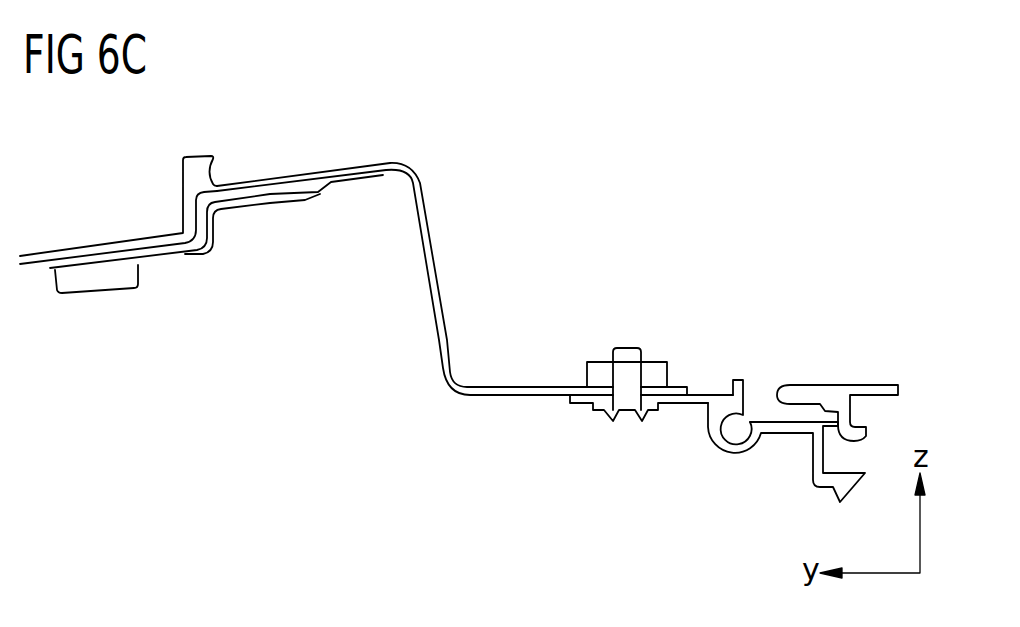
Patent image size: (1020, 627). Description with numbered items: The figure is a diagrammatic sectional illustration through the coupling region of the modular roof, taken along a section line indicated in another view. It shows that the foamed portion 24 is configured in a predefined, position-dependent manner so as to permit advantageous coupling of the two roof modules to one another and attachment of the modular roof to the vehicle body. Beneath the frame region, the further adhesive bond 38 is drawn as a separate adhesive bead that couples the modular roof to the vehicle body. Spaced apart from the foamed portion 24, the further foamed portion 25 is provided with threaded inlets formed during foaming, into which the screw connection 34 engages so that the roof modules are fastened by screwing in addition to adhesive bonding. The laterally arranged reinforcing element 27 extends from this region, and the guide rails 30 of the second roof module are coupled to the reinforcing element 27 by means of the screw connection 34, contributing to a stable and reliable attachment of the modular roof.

The foamed portion 24 is at (192, 182).
The reinforcing element 27 is at (430, 264).
The further adhesive bond 38 is at (102, 283).
The screw connection 34 is at (629, 355).
The further foamed portion 25 is at (658, 373).
The guide rail 30 is at (773, 436).